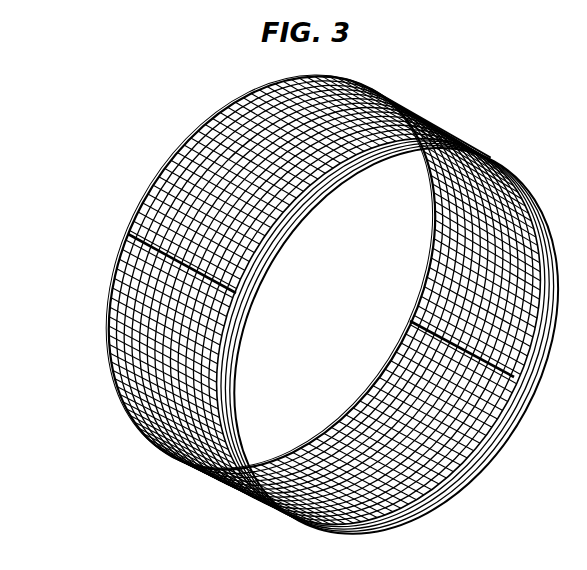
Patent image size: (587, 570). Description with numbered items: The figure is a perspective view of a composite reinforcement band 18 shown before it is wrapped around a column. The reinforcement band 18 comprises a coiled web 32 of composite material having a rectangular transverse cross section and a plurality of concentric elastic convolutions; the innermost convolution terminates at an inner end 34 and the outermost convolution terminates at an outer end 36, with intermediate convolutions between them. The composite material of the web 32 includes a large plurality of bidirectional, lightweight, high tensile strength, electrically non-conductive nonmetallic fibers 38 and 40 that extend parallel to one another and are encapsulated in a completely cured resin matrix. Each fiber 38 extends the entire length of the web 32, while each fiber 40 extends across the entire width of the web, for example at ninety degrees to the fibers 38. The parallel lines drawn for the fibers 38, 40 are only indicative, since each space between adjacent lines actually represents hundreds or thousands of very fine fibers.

The composite reinforcement band 18 is at (150, 156).
The coiled web 32 is at (222, 106).
The inner end 34 is at (401, 313).
The outer end 36 is at (121, 226).
The fibers 38 is at (276, 232).
The fibers 40 is at (147, 358).